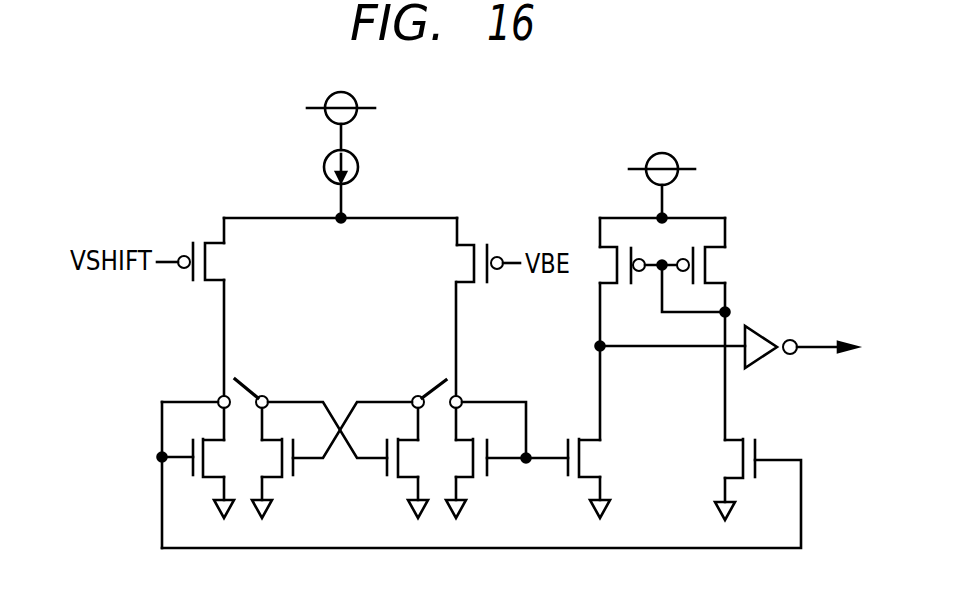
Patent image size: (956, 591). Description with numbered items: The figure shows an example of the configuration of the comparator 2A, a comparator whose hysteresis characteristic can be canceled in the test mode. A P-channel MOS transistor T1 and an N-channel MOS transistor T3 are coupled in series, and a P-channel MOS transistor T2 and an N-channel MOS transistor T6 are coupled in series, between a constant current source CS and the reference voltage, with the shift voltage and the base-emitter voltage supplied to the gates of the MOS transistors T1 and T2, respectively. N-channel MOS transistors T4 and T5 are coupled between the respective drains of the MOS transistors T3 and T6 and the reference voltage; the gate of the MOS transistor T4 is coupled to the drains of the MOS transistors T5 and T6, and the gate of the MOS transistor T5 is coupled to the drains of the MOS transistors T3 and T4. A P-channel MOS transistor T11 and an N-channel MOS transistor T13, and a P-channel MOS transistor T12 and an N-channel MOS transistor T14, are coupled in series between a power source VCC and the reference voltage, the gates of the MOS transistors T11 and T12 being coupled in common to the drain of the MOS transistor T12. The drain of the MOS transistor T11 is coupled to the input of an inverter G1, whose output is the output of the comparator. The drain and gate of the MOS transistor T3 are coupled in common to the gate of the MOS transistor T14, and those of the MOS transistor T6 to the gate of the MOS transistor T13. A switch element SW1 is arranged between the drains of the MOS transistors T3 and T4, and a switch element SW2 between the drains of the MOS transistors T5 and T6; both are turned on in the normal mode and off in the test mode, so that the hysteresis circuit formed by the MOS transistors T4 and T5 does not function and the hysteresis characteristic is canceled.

The comparator 2A is at (593, 91).
The power source VCC is at (355, 94).
The constant current source CS is at (360, 158).
The P-channel MOS transistor T1 is at (215, 261).
The P-channel MOS transistor T2 is at (463, 261).
The N-channel MOS transistor T3 is at (185, 470).
The N-channel MOS transistor T4 is at (302, 470).
The N-channel MOS transistor T5 is at (380, 470).
The N-channel MOS transistor T6 is at (488, 470).
The P-channel MOS transistor T11 is at (607, 262).
The P-channel MOS transistor T12 is at (715, 264).
The N-channel MOS transistor T13 is at (567, 470).
The N-channel MOS transistor T14 is at (760, 465).
The switch element SW1 is at (249, 380).
The switch element SW2 is at (436, 382).
The inverter G1 is at (758, 363).